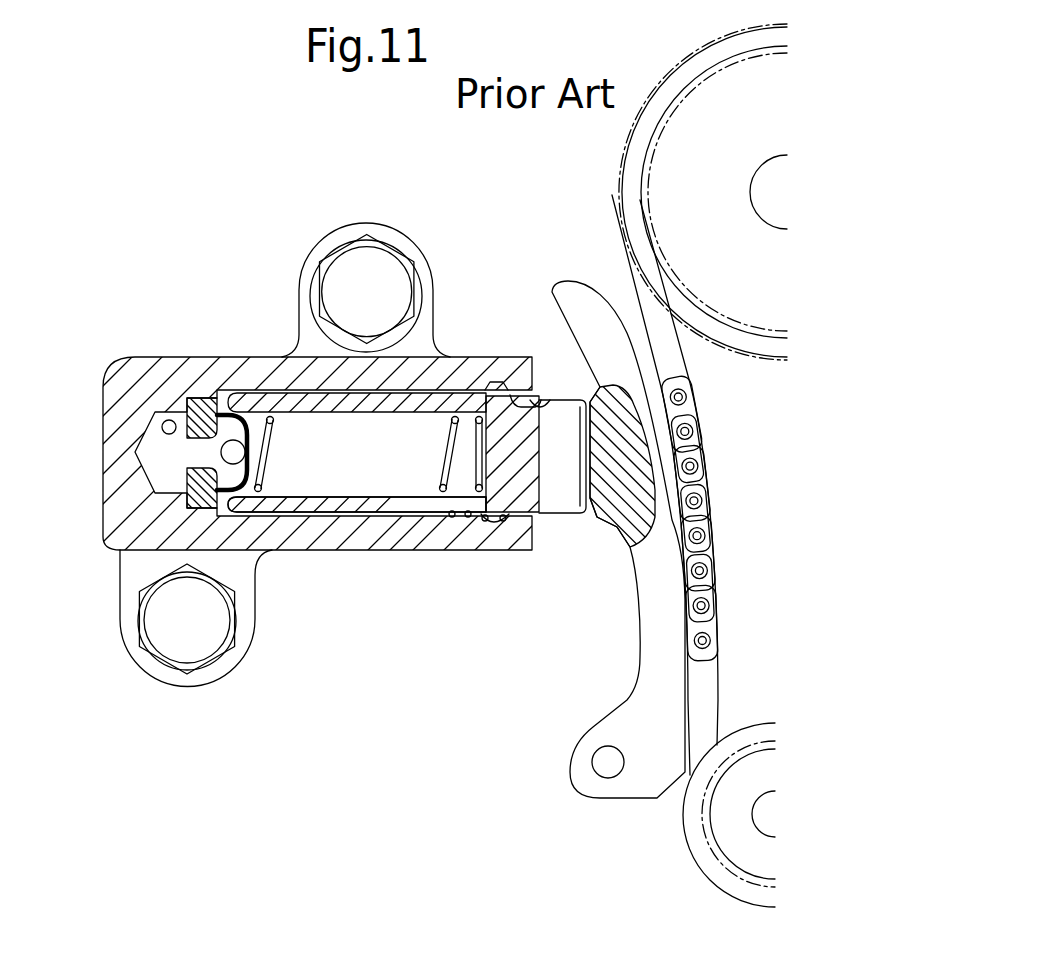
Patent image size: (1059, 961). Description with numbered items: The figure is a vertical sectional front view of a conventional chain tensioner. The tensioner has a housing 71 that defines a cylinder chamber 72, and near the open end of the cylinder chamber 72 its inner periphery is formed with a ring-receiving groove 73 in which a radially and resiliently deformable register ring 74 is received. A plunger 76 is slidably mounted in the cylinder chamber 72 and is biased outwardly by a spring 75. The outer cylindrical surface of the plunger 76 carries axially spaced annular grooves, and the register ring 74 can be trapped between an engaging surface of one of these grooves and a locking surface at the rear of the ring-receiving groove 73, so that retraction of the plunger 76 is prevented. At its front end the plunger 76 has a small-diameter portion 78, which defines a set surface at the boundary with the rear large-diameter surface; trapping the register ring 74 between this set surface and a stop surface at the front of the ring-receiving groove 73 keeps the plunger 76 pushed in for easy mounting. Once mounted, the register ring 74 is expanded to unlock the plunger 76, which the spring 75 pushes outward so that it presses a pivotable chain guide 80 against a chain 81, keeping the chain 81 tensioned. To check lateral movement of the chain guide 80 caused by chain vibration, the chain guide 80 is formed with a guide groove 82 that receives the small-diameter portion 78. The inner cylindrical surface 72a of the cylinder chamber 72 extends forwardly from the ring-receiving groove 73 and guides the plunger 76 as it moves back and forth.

The housing 71 is at (160, 357).
The cylinder chamber 72 is at (290, 400).
The inner cylindrical surface 72a is at (543, 404).
The ring-receiving groove 73 is at (480, 537).
The register ring 74 is at (503, 520).
The spring 75 is at (423, 492).
The plunger 76 is at (333, 507).
The small-diameter portion 78 is at (563, 503).
The chain guide 80 is at (658, 442).
The chain 81 is at (707, 497).
The guide groove 82 is at (630, 515).